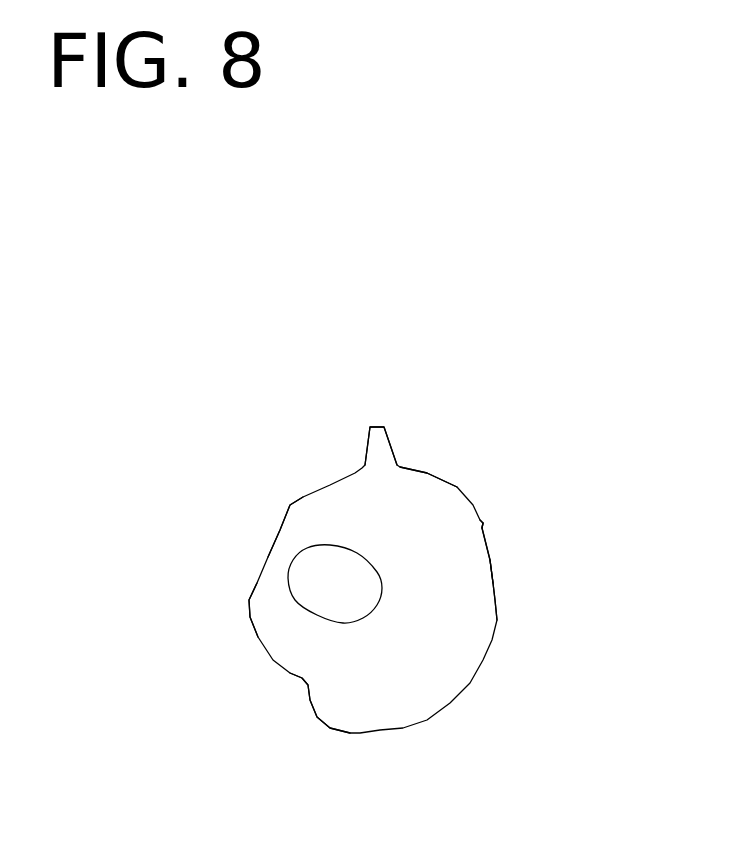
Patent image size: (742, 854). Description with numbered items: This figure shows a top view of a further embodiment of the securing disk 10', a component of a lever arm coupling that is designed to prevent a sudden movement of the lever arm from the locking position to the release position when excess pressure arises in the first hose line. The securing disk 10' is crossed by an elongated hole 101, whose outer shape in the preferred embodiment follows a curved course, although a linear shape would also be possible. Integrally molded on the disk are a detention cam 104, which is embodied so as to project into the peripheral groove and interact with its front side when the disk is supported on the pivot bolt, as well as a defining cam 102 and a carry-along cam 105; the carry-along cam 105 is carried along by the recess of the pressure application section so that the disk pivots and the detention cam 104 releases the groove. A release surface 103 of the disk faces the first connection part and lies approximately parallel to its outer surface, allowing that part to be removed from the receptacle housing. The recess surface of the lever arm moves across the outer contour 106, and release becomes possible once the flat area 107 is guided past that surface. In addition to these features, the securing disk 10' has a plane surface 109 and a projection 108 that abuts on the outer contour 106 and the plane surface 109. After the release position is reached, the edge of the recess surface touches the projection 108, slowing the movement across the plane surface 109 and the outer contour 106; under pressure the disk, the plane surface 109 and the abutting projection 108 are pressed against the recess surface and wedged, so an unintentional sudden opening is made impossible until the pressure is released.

The securing disk 10' is at (373, 580).
The elongated hole 101 is at (328, 567).
The defining cam 102 is at (320, 715).
The release surface 103 is at (263, 516).
The detention cam 104 is at (249, 599).
The carry-along cam 105 is at (380, 445).
The outer contour 106 is at (564, 516).
The flat area 107 is at (424, 444).
The projection 108 is at (496, 531).
The plane surface 109 is at (493, 587).